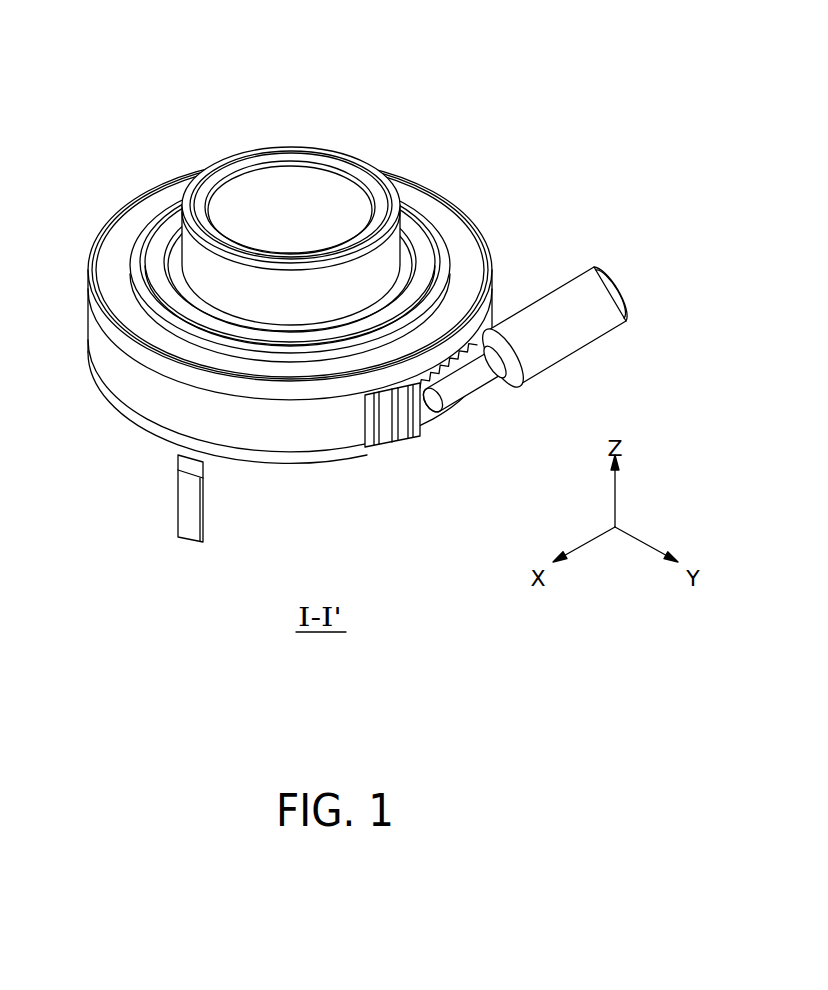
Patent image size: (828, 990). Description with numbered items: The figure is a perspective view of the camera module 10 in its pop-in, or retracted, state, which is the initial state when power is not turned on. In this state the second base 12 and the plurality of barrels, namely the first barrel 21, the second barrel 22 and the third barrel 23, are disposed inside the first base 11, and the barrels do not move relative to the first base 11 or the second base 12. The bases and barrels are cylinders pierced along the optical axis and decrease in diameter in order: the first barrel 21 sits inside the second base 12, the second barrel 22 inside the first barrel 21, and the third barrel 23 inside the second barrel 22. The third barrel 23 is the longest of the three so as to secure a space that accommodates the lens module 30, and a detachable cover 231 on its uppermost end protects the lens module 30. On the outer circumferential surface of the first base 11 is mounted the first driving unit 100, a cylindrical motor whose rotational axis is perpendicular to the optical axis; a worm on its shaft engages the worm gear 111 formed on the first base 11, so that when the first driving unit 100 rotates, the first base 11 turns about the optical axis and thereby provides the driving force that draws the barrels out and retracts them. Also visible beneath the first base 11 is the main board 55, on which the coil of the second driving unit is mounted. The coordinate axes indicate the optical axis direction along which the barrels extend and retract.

The camera module 10 is at (122, 37).
The first base 11 is at (273, 440).
The second base 12 is at (145, 235).
The first barrel 21 is at (167, 240).
The second barrel 22 is at (175, 277).
The third barrel 23 is at (400, 243).
The lens module 30 is at (313, 187).
The detachable cover 231 is at (258, 185).
The main board 55 is at (185, 528).
The first driving unit 100 is at (567, 297).
The worm gear 111 is at (405, 423).